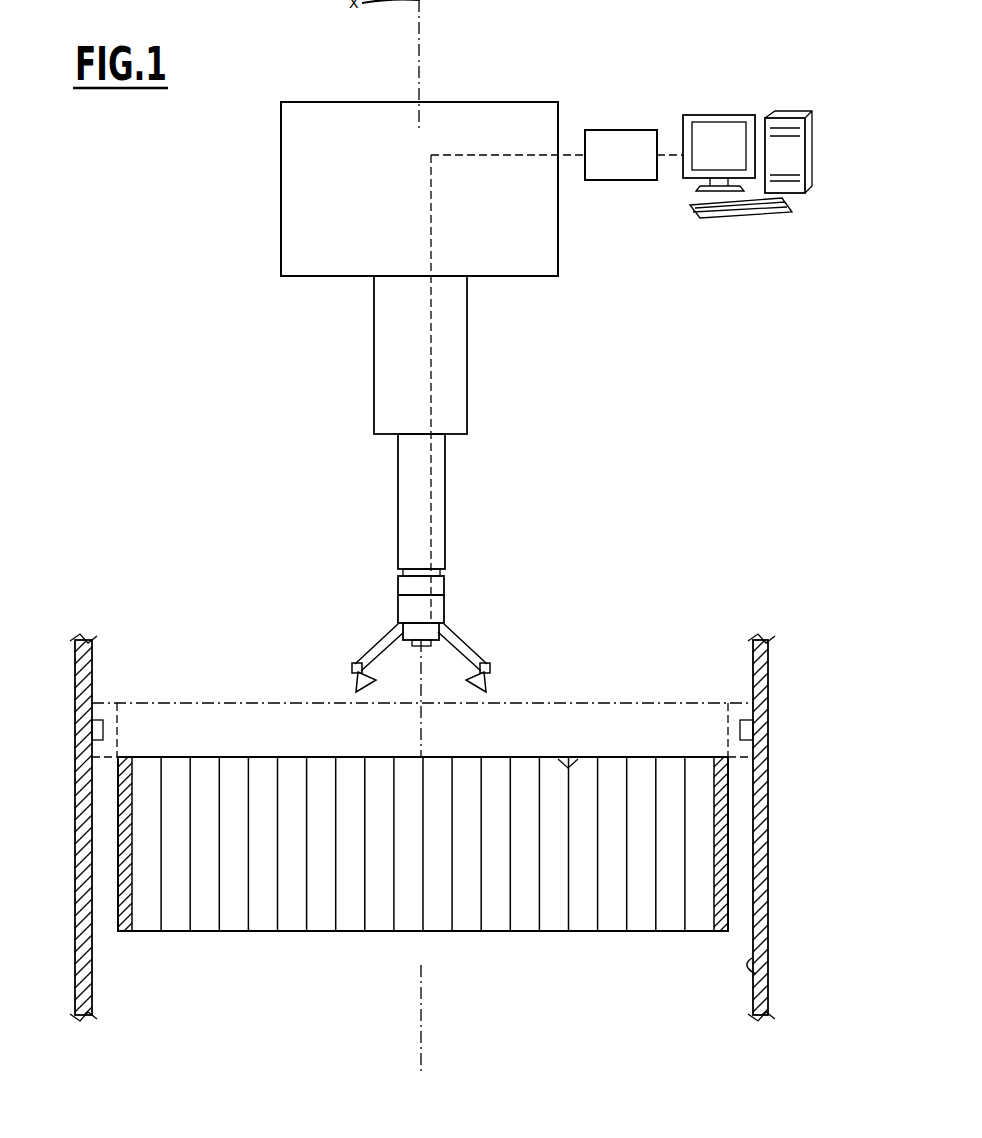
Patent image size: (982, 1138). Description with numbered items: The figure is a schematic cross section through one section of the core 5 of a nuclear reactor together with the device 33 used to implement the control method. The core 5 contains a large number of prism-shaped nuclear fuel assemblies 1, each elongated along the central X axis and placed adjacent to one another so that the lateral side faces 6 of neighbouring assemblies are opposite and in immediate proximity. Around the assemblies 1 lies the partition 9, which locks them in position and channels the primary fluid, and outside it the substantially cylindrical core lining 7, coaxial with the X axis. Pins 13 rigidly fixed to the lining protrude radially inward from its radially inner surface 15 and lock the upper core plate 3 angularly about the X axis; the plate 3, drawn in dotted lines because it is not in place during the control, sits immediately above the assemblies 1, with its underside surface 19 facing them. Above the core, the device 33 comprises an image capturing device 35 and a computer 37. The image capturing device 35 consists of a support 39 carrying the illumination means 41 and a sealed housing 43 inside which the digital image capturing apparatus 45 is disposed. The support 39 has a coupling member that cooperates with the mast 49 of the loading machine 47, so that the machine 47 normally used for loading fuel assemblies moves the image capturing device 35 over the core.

The nuclear fuel assembly 1 is at (697, 836).
The upper core plate 3 is at (472, 785).
The core 5 is at (438, 765).
The lateral side face 6 is at (672, 892).
The core lining 7 is at (756, 942).
The partition 9 is at (122, 841).
The pin 13 is at (96, 733).
The radially inner surface 15 is at (756, 974).
The underside surface 19 is at (573, 757).
The device 33 is at (483, 403).
The image capturing device 35 is at (419, 648).
The computer 37 is at (671, 195).
The support 39 is at (446, 585).
The illumination means 41 is at (352, 668).
The sealed housing 43 is at (403, 643).
The digital image capturing apparatus 45 is at (424, 648).
The loading machine 47 is at (356, 371).
The mast 49 is at (445, 493).